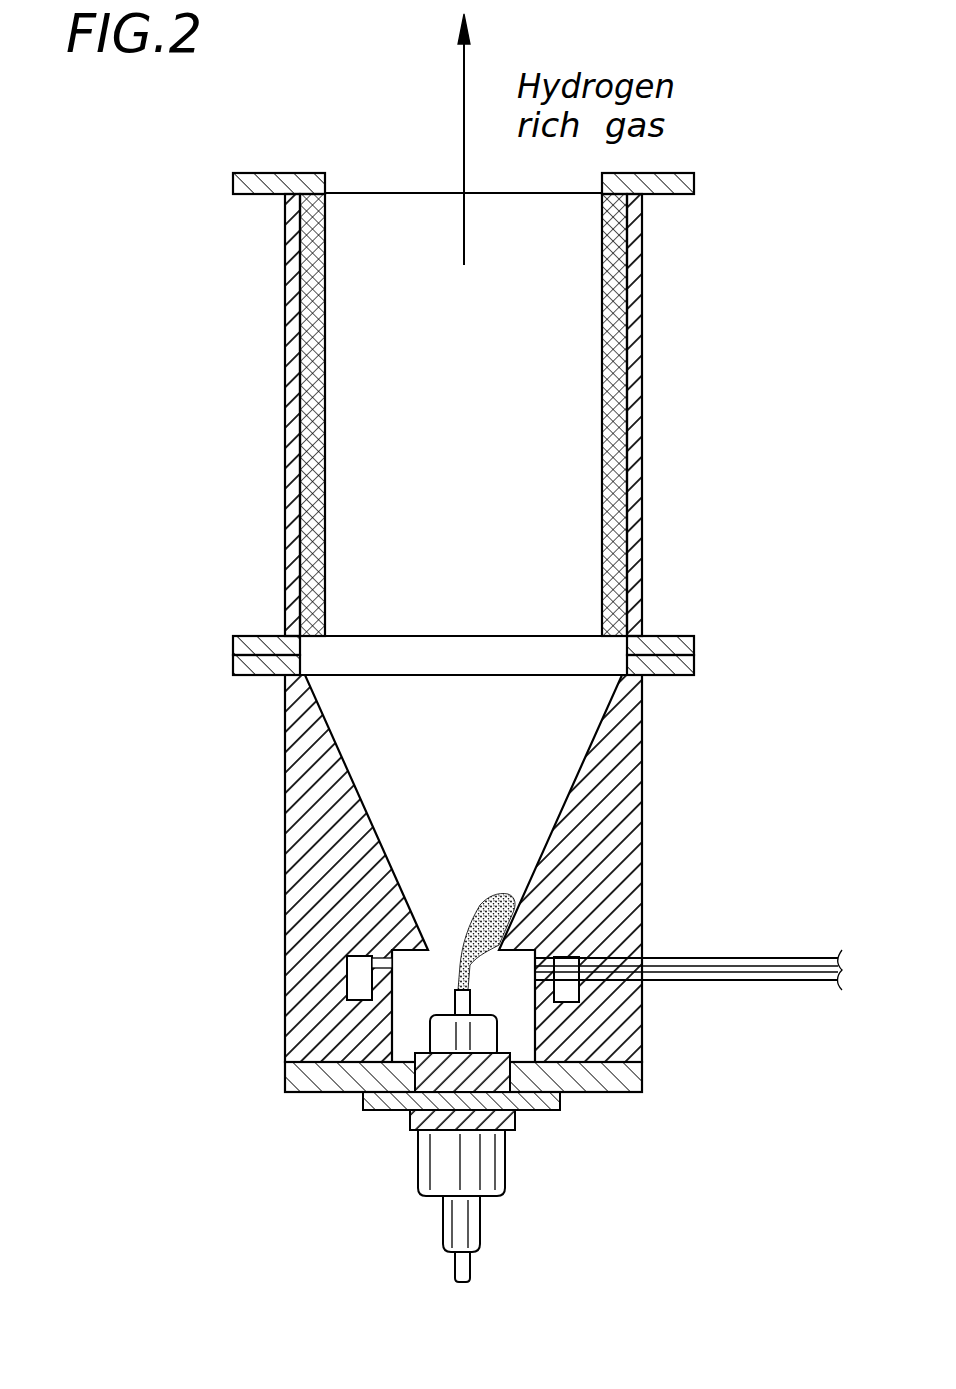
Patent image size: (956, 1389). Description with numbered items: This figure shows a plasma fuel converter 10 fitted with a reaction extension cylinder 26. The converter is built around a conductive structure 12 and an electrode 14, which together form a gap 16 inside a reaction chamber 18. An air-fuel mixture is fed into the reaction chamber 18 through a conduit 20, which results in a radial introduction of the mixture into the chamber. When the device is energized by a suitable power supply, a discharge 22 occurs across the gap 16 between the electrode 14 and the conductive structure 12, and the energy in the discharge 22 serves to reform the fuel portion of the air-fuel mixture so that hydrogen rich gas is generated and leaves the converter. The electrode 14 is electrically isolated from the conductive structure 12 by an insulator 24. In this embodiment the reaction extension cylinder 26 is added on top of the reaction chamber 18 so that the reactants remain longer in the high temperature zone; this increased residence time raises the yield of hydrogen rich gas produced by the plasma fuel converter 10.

The plasma fuel converter 10 is at (256, 762).
The conductive structure 12 is at (285, 860).
The electrode 14 is at (448, 1265).
The gap 16 is at (466, 922).
The reaction chamber 18 is at (476, 804).
The conduit 20 is at (732, 962).
The discharge 22 is at (491, 895).
The insulator 24 is at (508, 1148).
The reaction extension cylinder 26 is at (288, 385).